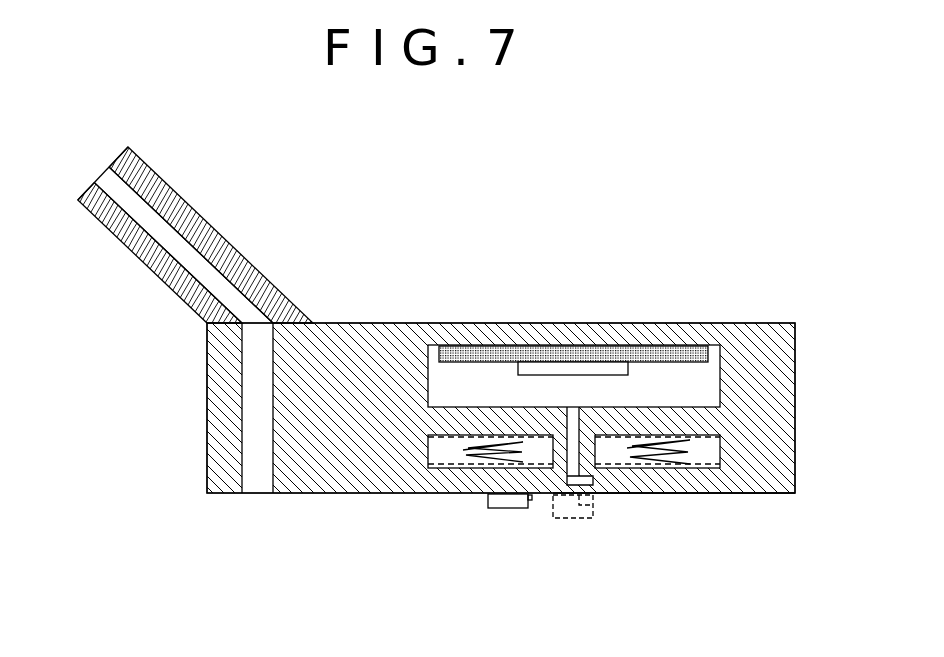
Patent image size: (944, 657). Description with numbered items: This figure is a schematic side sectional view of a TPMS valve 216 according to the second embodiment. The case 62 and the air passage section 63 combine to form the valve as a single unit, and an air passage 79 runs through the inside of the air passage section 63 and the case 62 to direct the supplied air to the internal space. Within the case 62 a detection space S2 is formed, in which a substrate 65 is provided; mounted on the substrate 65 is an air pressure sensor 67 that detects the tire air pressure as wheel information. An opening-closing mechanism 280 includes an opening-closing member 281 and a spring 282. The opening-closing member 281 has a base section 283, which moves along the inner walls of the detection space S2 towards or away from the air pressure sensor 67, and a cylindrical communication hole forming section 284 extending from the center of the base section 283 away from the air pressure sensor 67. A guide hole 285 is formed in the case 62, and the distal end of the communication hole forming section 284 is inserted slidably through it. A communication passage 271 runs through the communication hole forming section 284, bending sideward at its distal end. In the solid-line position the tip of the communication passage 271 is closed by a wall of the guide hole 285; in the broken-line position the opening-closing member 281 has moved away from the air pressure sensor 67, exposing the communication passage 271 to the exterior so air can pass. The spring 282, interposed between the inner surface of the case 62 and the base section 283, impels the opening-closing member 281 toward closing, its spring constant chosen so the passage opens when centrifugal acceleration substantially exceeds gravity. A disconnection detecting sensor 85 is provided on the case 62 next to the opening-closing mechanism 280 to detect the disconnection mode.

The TPMS valve 216 is at (658, 218).
The case 62 is at (750, 320).
The air passage section 63 is at (172, 185).
The air passage 79 is at (167, 250).
The detection space S2 is at (710, 387).
The substrate 65 is at (583, 352).
The air pressure sensor 67 is at (538, 368).
The spring 282 is at (462, 467).
The disconnection detecting sensor 85 is at (492, 512).
The guide hole 285 is at (560, 492).
The communication passage 271 is at (572, 482).
The opening-closing mechanism 280 is at (613, 477).
The communication hole forming section 284 is at (642, 477).
The base section 283 is at (660, 528).
The opening-closing member 281 is at (682, 505).